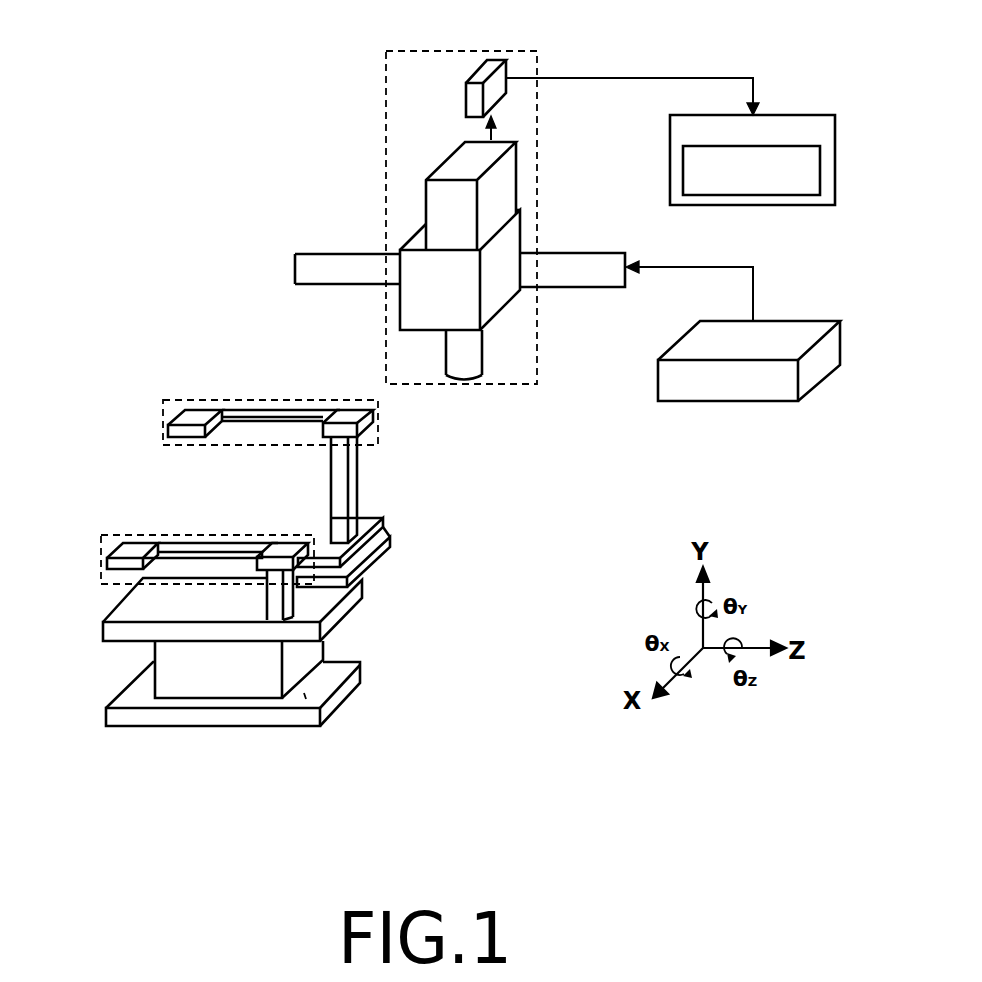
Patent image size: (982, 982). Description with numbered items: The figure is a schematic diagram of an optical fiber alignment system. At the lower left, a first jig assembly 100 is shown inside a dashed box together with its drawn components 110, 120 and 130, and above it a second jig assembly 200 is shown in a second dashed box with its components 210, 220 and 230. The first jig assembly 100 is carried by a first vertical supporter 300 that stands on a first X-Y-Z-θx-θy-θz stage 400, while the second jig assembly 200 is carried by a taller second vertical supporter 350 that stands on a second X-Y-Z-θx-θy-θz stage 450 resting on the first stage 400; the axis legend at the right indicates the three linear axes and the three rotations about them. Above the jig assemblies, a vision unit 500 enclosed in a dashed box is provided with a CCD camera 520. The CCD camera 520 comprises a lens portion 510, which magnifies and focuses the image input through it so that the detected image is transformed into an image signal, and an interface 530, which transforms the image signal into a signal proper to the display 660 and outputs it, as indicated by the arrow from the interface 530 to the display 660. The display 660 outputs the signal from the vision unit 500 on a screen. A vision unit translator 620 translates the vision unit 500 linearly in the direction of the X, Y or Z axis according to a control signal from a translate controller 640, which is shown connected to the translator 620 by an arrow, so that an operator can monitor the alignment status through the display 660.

The first jig assembly 100 is at (123, 536).
The first probe 110 is at (101, 560).
The second probe 120 is at (287, 546).
The connecting bar 130 is at (207, 548).
The second jig assembly 200 is at (195, 400).
The third probe 210 is at (163, 431).
The fourth probe 220 is at (346, 410).
The connecting bar 230 is at (282, 410).
The first vertical supporter 300 is at (293, 605).
The second vertical supporter 350 is at (357, 487).
The first X-Y-Z-θx-θy-θz stage 400 is at (366, 615).
The second X-Y-Z-θx-θy-θz stage 450 is at (404, 534).
The vision unit 500 is at (386, 96).
The lens portion 510 is at (490, 319).
The CCD camera 520 is at (433, 205).
The interface 530 is at (486, 67).
The vision unit translator 620 is at (563, 258).
The translate controller 640 is at (691, 403).
The display 660 is at (670, 152).